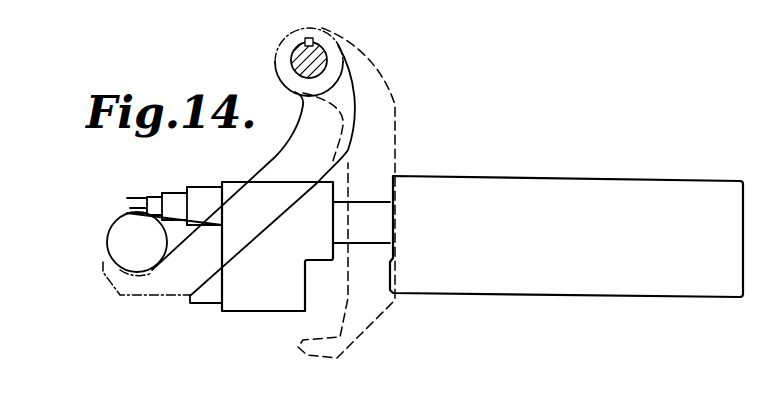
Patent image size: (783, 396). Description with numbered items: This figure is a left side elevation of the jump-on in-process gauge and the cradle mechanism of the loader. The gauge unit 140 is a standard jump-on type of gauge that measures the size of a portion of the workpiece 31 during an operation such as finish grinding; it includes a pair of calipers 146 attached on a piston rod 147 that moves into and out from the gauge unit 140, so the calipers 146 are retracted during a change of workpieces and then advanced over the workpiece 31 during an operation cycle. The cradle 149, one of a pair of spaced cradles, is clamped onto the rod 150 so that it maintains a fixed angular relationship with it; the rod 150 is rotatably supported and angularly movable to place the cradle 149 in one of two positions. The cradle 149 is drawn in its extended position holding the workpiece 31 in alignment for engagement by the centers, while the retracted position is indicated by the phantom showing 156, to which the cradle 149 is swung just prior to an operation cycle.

The workpiece 31 is at (107, 251).
The gauge unit 140 is at (648, 180).
The calipers 146 is at (162, 196).
The piston rod 147 is at (340, 225).
The cradle 149 is at (272, 158).
The rod 150 is at (297, 50).
The retracted position 156 is at (395, 95).